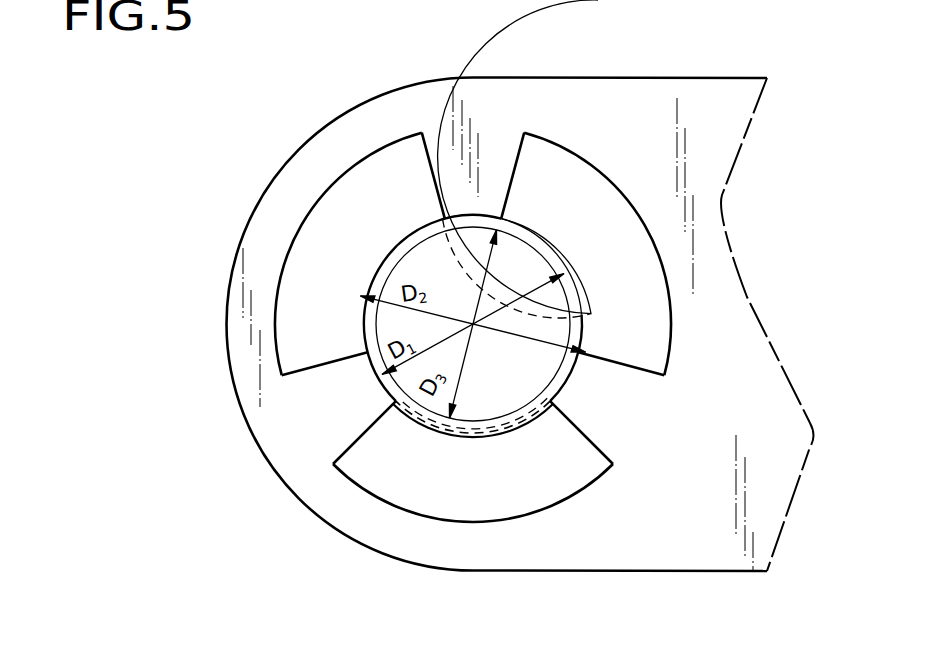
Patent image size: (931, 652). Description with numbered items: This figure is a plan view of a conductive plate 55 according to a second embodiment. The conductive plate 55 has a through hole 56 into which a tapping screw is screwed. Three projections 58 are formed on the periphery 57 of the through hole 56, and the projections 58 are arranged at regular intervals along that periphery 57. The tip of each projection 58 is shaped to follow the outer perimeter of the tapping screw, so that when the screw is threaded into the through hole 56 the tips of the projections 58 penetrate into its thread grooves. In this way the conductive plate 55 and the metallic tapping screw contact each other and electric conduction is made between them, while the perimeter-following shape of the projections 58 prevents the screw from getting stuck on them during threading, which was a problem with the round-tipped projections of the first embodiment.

The conductive plate 55 is at (636, 78).
The through hole 56 is at (350, 210).
The periphery 57 is at (472, 522).
The projection 58 is at (500, 150).